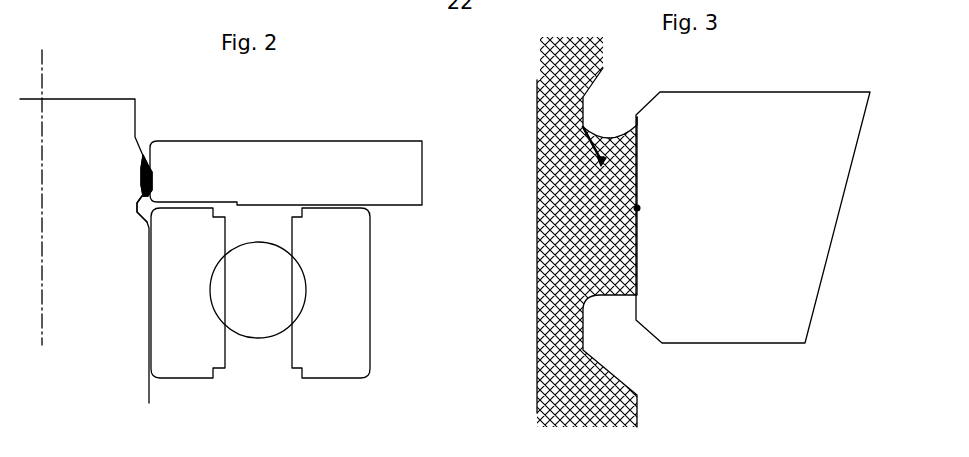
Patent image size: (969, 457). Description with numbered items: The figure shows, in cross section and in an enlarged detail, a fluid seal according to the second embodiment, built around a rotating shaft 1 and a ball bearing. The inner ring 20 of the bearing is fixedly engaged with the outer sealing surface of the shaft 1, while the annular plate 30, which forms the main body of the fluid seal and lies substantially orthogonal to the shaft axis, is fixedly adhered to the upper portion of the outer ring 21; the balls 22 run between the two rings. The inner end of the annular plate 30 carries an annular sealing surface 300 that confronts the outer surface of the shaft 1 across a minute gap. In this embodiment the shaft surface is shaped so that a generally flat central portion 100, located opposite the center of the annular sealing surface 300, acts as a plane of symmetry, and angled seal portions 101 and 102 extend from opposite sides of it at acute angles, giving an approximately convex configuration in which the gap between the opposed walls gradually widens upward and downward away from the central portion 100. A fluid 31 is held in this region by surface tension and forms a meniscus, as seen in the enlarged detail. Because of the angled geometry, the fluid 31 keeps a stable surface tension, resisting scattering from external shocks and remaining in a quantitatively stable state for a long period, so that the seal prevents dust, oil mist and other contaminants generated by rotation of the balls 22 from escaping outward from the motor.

In FIG. 2, the shaft 1 is at (75, 115).
In FIG. 3, the shaft 1 is at (557, 100).
In FIG. 2, the inner ring 20 is at (173, 283).
In FIG. 2, the outer ring 21 is at (342, 293).
In FIG. 2, the balls 22 is at (259, 302).
In FIG. 2, the annular plate 30 is at (258, 180).
In FIG. 3, the annular plate 30 is at (793, 118).
In FIG. 2, the annular sealing surface 300 is at (151, 170).
In FIG. 3, the annular sealing surface 300 is at (637, 208).
In FIG. 2, the fluid 31 is at (140, 196).
In FIG. 3, the fluid 31 is at (627, 255).
In FIG. 3, the central portion 100 is at (627, 220).
In FIG. 3, the angled seal portion 101 is at (627, 170).
In FIG. 3, the angled seal portion 102 is at (603, 292).